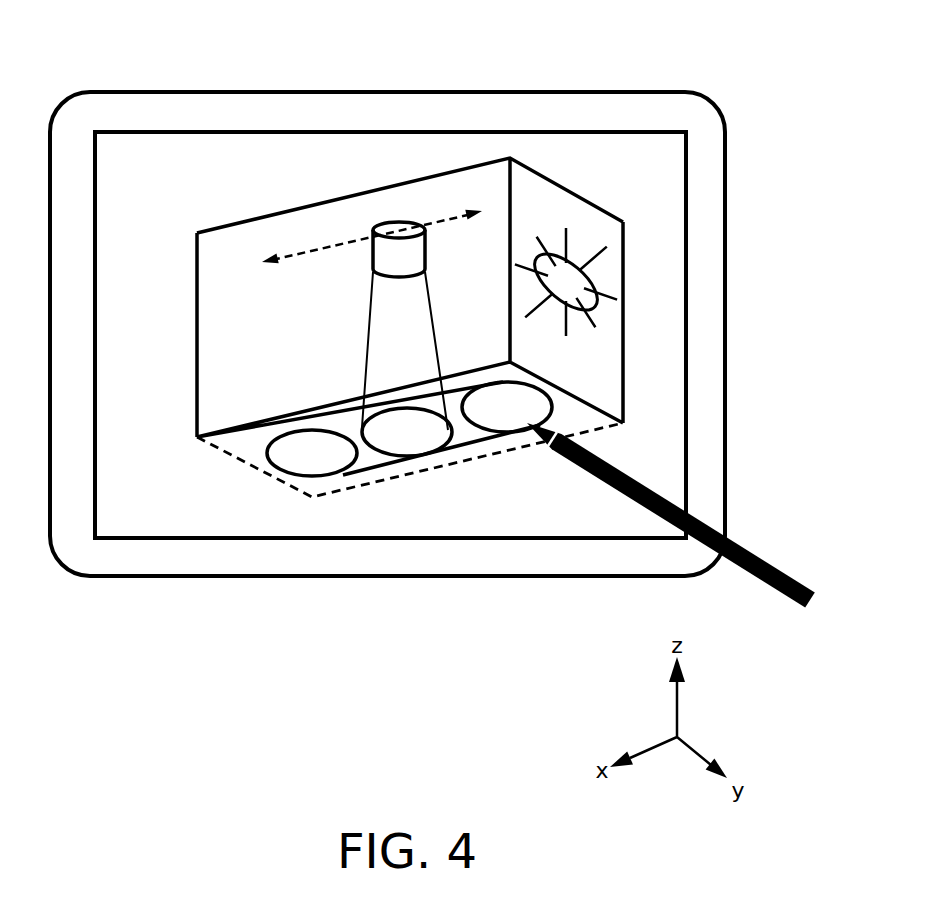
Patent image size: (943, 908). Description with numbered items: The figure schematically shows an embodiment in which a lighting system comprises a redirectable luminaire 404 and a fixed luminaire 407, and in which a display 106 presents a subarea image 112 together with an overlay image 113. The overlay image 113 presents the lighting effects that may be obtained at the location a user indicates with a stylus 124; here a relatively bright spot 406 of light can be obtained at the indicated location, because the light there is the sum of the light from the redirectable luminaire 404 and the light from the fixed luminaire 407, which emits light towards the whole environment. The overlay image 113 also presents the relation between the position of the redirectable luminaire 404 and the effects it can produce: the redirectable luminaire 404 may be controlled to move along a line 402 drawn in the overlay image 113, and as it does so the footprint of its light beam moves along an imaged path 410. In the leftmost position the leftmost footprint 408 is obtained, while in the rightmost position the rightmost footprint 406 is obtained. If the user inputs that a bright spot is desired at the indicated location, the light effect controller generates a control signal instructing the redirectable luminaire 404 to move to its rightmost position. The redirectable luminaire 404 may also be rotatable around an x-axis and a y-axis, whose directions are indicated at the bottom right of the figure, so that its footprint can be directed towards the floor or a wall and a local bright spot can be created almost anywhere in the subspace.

The display 106 is at (60, 100).
The subarea image 112 is at (150, 500).
The overlay image 113 is at (215, 500).
The stylus 124 is at (753, 563).
The line 402 is at (305, 250).
The redirectable luminaire 404 is at (394, 222).
The rightmost footprint 406 is at (500, 430).
The fixed luminaire 407 is at (590, 280).
The leftmost footprint 408 is at (322, 468).
The imaged path 410 is at (401, 455).